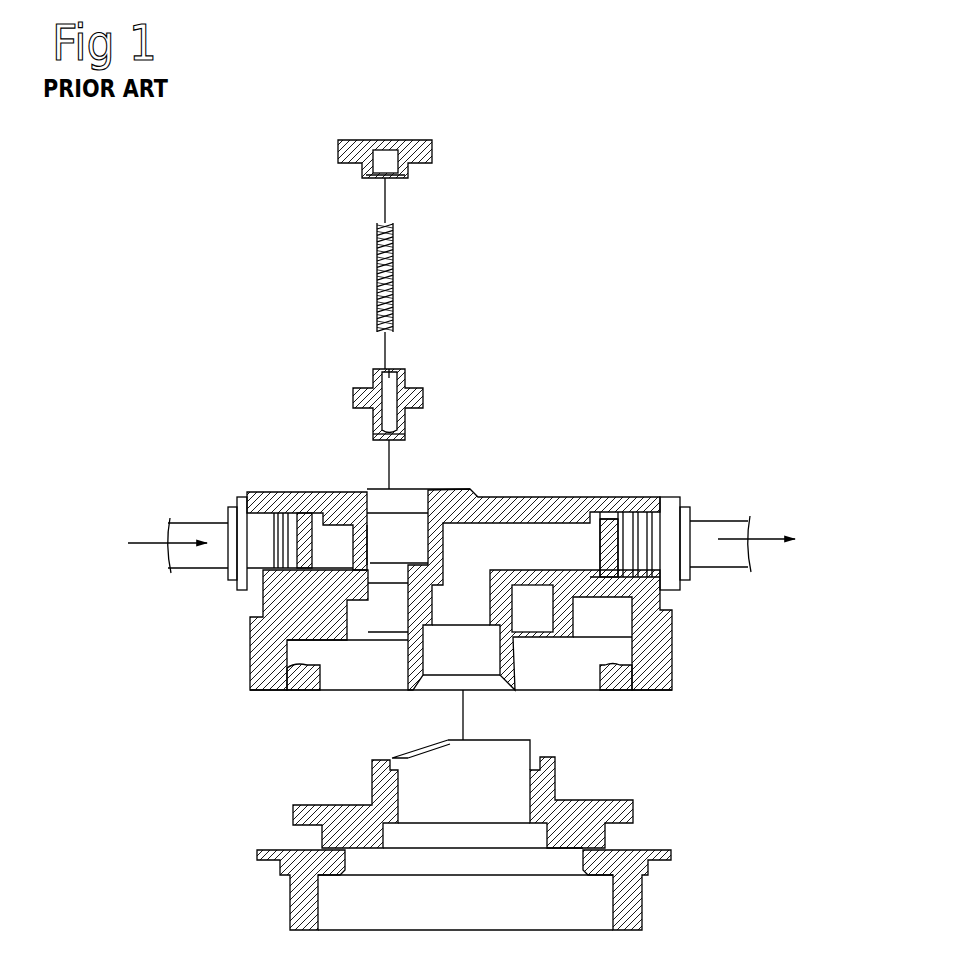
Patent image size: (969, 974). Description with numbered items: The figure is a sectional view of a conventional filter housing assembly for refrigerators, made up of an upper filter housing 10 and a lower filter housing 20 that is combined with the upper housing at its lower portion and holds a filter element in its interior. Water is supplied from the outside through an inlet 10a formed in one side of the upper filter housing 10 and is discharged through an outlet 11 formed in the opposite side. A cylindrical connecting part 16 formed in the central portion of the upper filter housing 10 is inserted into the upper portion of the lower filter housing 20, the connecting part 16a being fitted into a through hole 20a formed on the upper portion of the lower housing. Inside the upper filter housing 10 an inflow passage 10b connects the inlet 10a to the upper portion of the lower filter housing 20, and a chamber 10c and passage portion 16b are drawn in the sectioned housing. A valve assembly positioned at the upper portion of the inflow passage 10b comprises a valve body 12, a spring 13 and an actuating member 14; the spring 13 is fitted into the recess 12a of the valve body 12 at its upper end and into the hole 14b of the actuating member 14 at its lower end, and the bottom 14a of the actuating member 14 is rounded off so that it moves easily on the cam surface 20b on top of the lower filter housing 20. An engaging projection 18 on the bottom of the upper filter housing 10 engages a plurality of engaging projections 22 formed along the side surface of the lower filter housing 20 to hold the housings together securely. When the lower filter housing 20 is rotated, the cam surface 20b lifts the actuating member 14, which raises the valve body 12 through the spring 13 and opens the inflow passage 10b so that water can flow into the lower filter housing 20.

The upper filter housing 10 is at (397, 591).
The inlet 10a is at (168, 548).
The inflow passage 10b is at (378, 612).
The chamber 10c is at (383, 570).
The outlet 11 is at (740, 547).
The valve body 12 is at (435, 171).
The recess 12a is at (390, 168).
The spring 13 is at (416, 261).
The actuating member 14 is at (432, 401).
The guide bottom 14a is at (403, 437).
The hole 14b is at (392, 372).
The cylindrical connecting part 16 is at (468, 632).
The cylindrical connecting part 16a is at (408, 658).
The valve window 16b is at (520, 567).
The engaging projection 18 is at (258, 665).
The lower filter housing 20 is at (441, 833).
The through hole 20a is at (497, 763).
The cam surface 20b is at (425, 755).
The engaging projections 22 is at (633, 805).